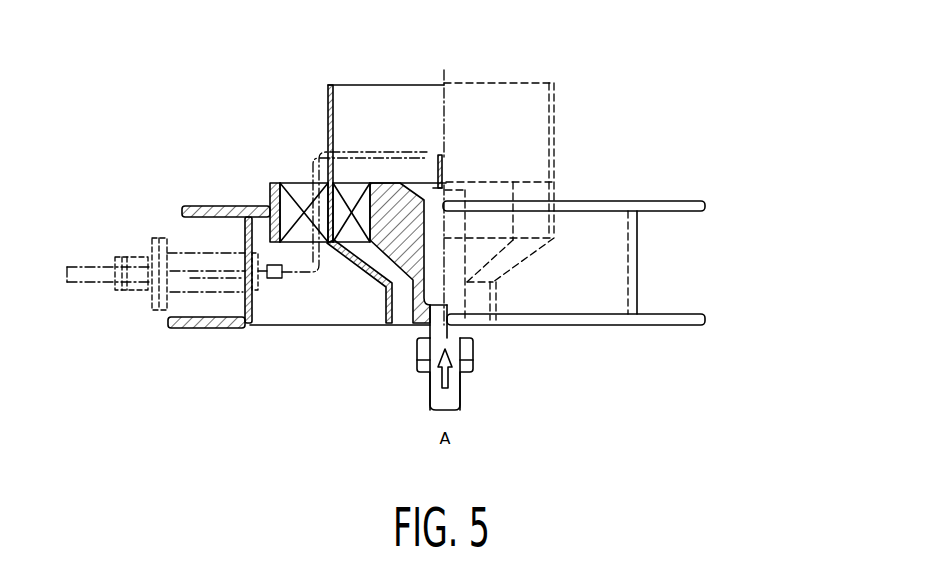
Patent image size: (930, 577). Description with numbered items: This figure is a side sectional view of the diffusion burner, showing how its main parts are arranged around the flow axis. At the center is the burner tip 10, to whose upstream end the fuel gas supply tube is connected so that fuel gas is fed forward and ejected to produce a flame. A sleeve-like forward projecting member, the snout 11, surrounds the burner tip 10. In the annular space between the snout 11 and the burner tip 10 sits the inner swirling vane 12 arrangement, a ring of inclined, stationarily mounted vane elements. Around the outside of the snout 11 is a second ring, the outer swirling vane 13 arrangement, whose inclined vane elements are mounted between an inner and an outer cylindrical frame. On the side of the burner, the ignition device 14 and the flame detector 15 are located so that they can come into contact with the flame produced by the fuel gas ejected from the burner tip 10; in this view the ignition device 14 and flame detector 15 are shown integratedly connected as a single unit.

The burner tip 10 is at (395, 165).
The snout 11 is at (330, 99).
The inner swirling vane 12 is at (344, 183).
The outer swirling vane 13 is at (301, 181).
The ignition device 14 is at (87, 282).
The flame detector 15 is at (122, 363).